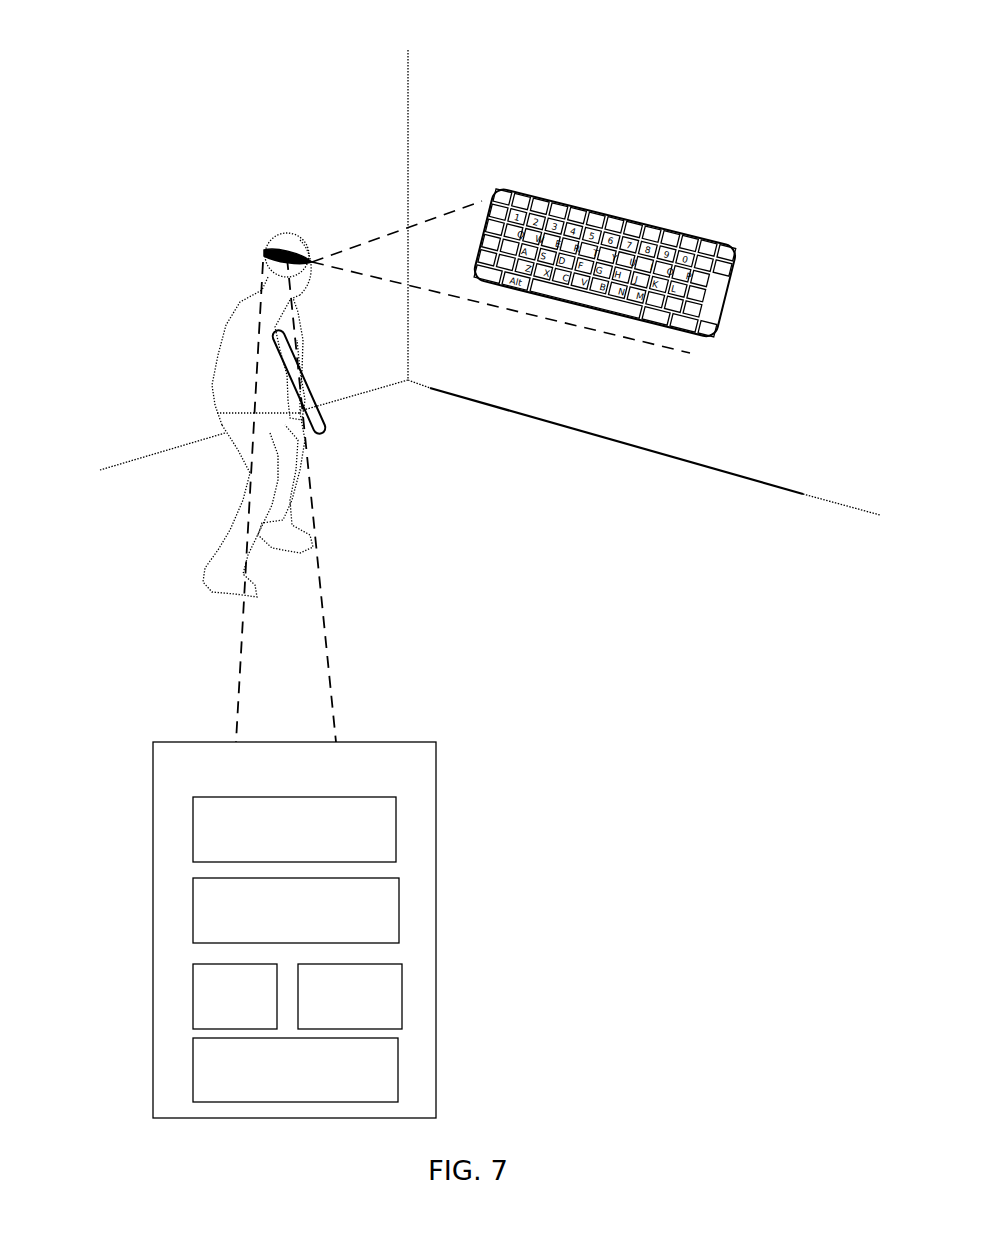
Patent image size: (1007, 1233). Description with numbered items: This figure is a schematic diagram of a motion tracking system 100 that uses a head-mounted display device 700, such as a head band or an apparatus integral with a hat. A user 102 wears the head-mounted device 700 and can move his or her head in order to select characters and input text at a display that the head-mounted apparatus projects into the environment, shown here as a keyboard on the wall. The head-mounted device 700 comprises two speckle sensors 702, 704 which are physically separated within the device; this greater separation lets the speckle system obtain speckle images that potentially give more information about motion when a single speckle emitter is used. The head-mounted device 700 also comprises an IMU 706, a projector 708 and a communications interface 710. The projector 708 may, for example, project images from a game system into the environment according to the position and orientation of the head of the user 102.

The system 100 is at (293, 100).
The user 102 is at (230, 326).
The head-mounted display device 700 is at (288, 248).
The speckle sensor 702 is at (396, 828).
The speckle sensor 704 is at (399, 908).
The IMU 706 is at (193, 998).
The projector 708 is at (402, 994).
The communications interface 710 is at (398, 1068).